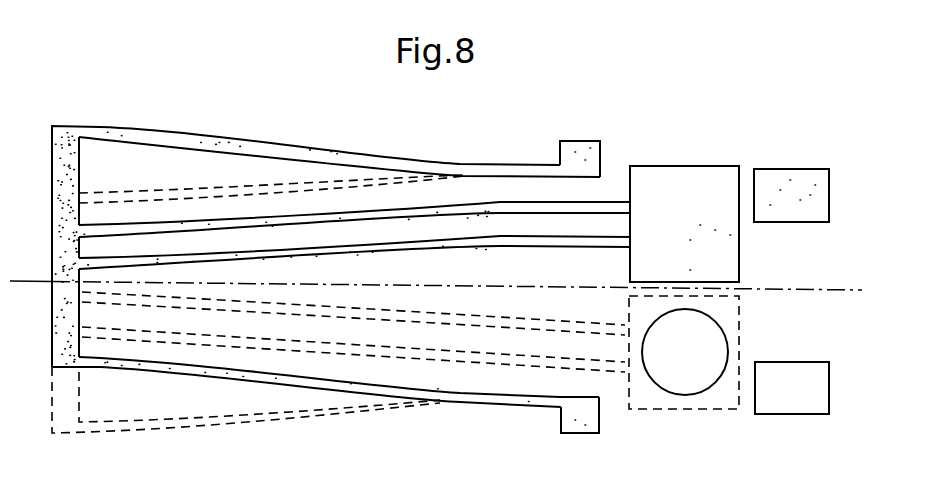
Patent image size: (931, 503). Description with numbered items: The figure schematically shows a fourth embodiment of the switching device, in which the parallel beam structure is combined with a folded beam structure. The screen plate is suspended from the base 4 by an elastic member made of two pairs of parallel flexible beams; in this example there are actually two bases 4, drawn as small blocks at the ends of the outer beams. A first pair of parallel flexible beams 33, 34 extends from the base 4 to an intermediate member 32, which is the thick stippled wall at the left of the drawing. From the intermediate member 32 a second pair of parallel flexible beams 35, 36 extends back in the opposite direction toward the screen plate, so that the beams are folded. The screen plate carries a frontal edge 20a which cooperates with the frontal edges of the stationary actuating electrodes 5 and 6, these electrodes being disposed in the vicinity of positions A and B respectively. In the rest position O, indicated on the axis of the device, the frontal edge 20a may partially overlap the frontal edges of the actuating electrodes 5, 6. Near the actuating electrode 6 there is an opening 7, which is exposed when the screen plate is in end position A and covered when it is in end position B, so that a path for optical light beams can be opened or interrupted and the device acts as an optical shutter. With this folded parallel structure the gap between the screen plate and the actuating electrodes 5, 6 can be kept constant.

The intermediate member 32 is at (70, 137).
The first parallel flexible beam 33 is at (218, 138).
The first parallel flexible beam 34 is at (438, 398).
The second parallel flexible beam 35 is at (133, 232).
The second parallel flexible beam 36 is at (535, 247).
The base 4 is at (582, 158).
The actuating electrode 5 is at (786, 183).
The actuating electrode 6 is at (800, 402).
The opening 7 is at (685, 381).
The frontal edge of screen plate 20a is at (740, 233).
The rest position O is at (790, 291).